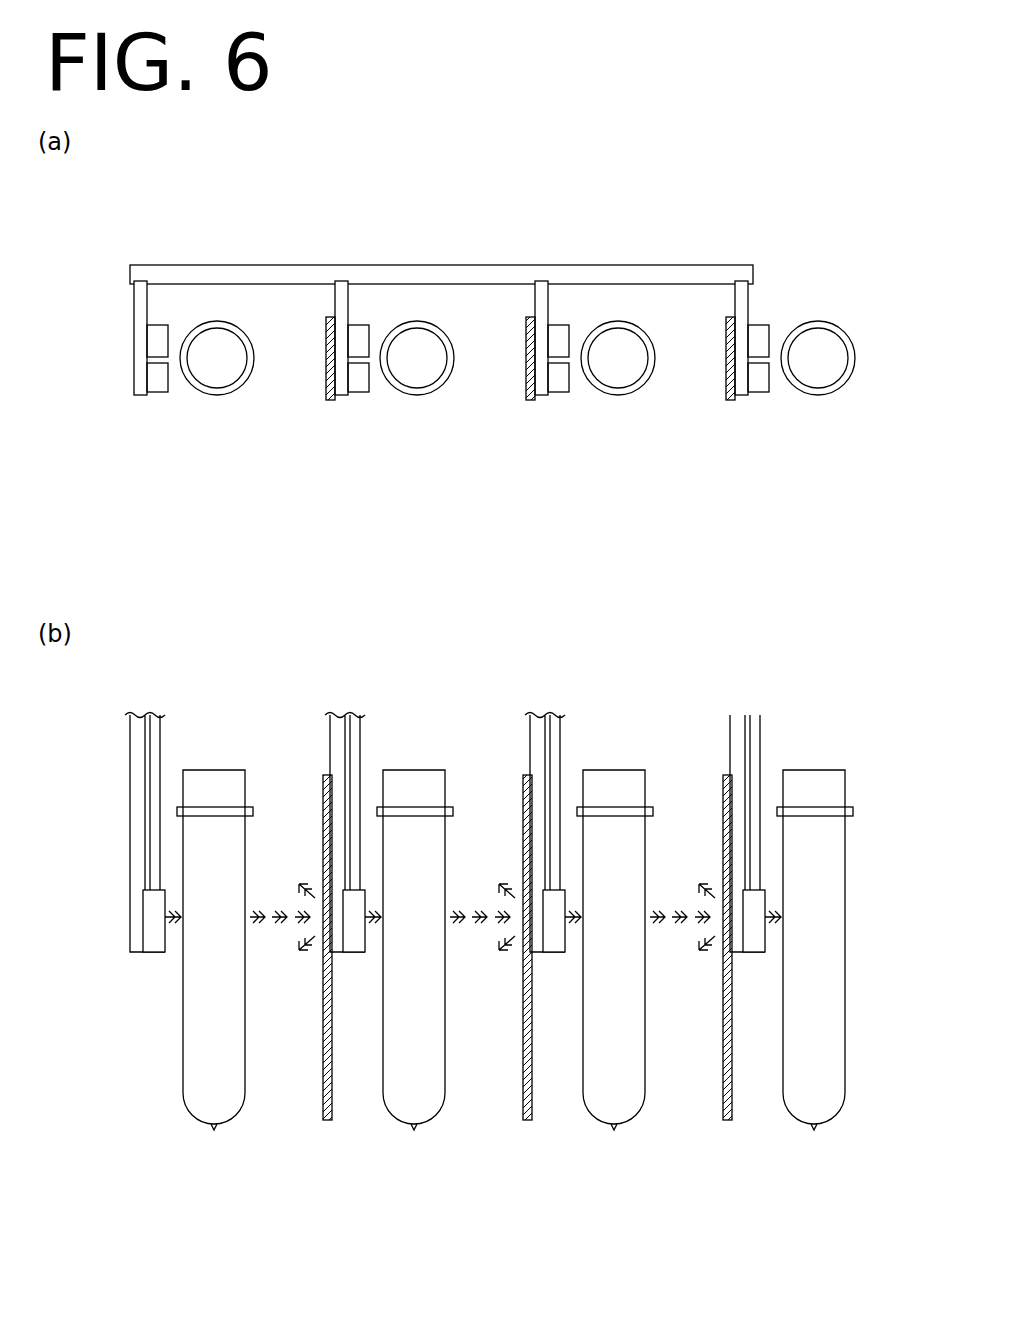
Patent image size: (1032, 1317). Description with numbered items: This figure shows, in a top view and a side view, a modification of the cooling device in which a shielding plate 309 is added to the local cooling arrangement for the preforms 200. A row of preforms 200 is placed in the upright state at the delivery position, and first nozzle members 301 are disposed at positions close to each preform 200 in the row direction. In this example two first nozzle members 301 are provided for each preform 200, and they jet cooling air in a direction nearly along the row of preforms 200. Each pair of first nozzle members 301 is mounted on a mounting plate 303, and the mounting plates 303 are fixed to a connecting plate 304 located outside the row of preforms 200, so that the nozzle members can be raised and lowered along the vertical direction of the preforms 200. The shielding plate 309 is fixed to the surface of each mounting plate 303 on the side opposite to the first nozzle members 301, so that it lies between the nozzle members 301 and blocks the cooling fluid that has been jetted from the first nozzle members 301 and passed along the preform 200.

The preform 200 is at (213, 390).
The first nozzle member 301 is at (558, 990).
The mounting plate 303 is at (138, 318).
The connecting plate 304 is at (407, 266).
The shielding plate 309 is at (330, 397).